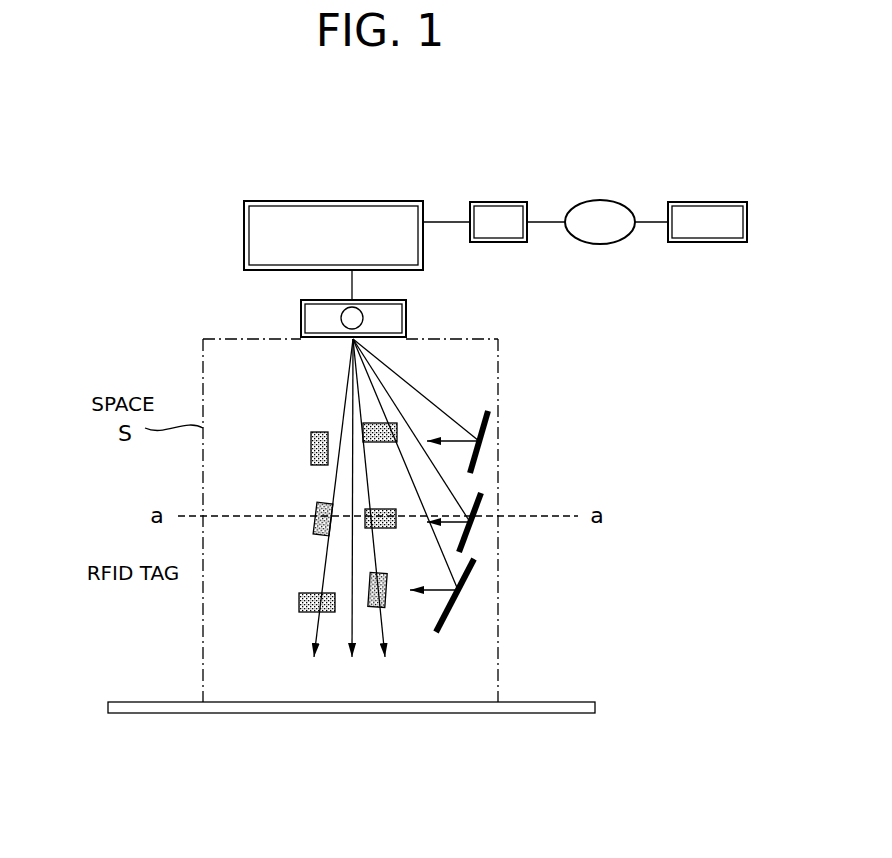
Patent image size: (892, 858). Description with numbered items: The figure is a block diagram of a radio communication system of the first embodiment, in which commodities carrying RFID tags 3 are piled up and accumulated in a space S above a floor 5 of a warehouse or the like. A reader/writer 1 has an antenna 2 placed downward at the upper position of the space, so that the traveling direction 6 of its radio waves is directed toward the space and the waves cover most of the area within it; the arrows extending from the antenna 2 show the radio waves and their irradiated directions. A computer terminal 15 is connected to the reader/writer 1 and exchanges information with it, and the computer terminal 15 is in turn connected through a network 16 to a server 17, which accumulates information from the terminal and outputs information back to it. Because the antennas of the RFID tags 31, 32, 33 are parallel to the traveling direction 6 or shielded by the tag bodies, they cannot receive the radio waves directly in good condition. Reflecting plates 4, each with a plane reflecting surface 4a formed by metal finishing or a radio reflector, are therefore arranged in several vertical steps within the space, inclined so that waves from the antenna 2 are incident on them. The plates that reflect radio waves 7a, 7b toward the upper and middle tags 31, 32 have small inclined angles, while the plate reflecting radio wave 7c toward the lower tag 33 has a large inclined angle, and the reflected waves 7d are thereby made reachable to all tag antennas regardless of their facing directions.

The reader/writer 1 is at (244, 222).
The antenna 2 is at (301, 318).
The RFID tag 3 is at (372, 424).
The RFID tag 31 is at (311, 440).
The RFID tag 32 is at (316, 505).
The RFID tag 33 is at (375, 612).
The reflecting plate 4 is at (483, 437).
The reflecting surface 4a is at (486, 418).
The floor 5 is at (551, 702).
The traveling direction 6 is at (352, 648).
The radio wave 7a is at (413, 385).
The radio wave 7b is at (450, 487).
The radio wave 7c is at (460, 586).
The reflected radio wave 7d is at (465, 441).
The computer terminal 15 is at (505, 202).
The network 16 is at (600, 200).
The server 17 is at (710, 202).